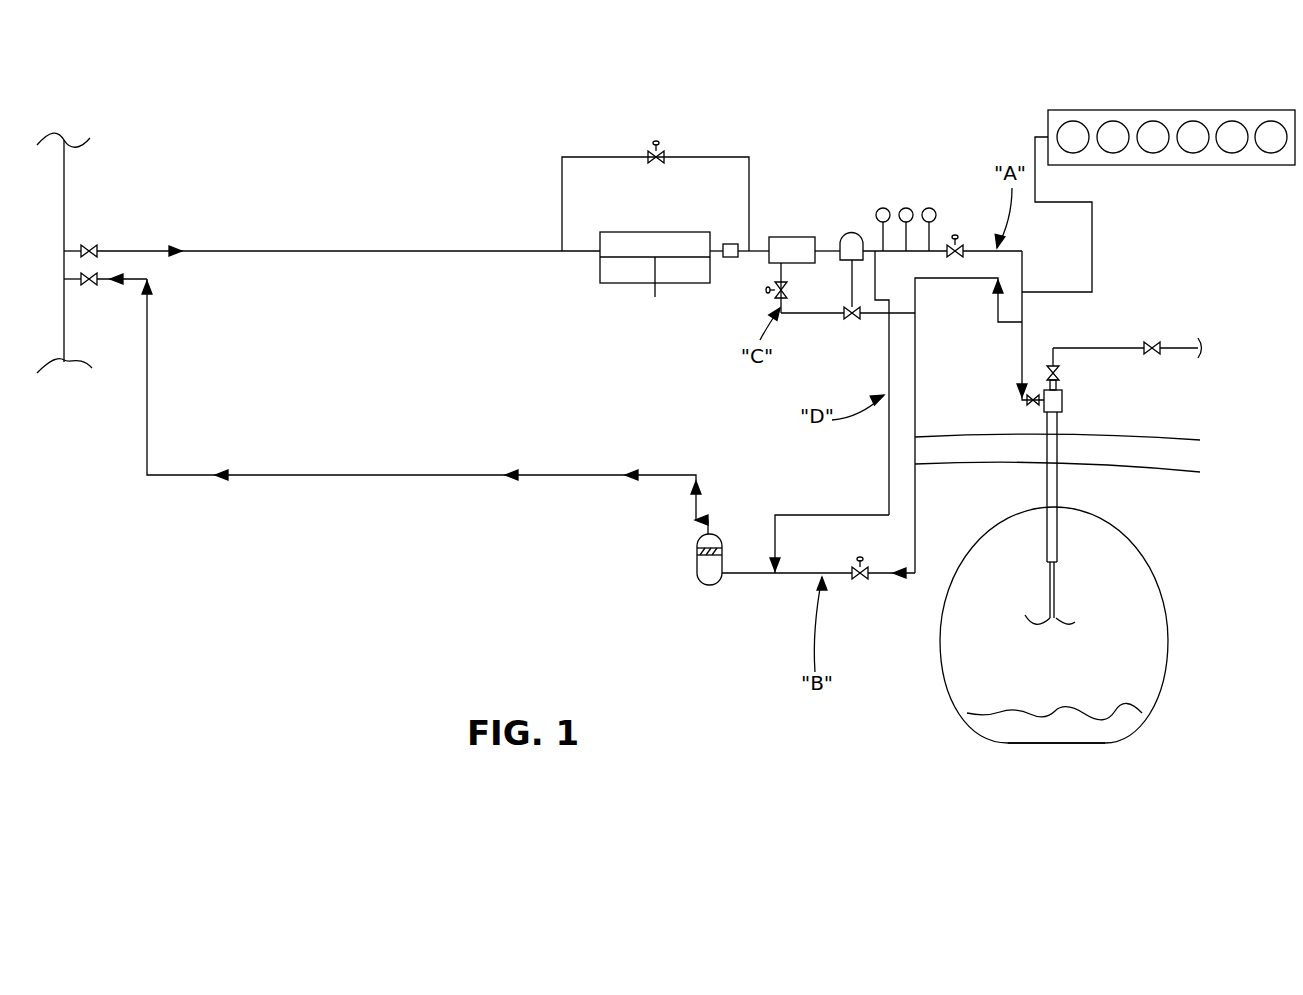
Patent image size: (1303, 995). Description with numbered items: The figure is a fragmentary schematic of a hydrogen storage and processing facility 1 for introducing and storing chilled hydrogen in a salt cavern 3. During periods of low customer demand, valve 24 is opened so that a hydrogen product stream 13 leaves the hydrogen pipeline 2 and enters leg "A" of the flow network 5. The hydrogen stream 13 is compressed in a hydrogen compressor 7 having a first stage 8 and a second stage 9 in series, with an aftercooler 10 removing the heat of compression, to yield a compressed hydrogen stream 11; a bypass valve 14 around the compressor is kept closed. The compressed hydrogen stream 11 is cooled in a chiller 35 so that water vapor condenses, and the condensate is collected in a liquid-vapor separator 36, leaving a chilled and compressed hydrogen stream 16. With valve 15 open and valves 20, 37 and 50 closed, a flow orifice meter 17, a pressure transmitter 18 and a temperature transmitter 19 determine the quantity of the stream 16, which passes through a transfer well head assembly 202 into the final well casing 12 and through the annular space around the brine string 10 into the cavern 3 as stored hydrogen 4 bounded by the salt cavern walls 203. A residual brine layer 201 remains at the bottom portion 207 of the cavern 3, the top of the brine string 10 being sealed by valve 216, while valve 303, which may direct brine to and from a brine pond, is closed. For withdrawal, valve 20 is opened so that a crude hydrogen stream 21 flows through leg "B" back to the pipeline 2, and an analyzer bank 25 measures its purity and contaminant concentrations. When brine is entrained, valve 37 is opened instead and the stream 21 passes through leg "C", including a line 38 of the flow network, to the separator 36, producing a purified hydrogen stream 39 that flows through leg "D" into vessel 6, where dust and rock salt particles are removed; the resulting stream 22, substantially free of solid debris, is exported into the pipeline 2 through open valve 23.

The hydrogen storage and processing facility 1 is at (728, 75).
The hydrogen pipeline 2 is at (90, 138).
The salt cavern 3 is at (1188, 656).
The stored hydrogen 4 is at (1074, 563).
The flow network 5 is at (820, 190).
The vessel 6 is at (697, 560).
The hydrogen compressor 7 is at (662, 232).
The first stage 8 is at (612, 270).
The second stage 9 is at (676, 275).
The brine string 10 is at (731, 258).
The compressed hydrogen stream 11 is at (763, 232).
The final well casing 12 is at (1060, 486).
The hydrogen product stream 13 is at (228, 249).
The bypass valve 14 is at (662, 155).
The valve 15 is at (963, 244).
The chilled and compressed hydrogen stream 16 is at (1023, 278).
The flow orifice meter 17 is at (932, 208).
The pressure transmitter 18 is at (886, 208).
The temperature transmitter 19 is at (909, 208).
The valve 20 is at (860, 580).
The crude hydrogen stream 21 is at (950, 282).
The stream 22 is at (147, 393).
The valve 23 is at (90, 287).
The valve 24 is at (89, 244).
The analyzer bank 25 is at (1097, 110).
The chiller 35 is at (800, 237).
The liquid-vapor separator 36 is at (852, 233).
The valve 37 is at (852, 320).
The drain line 38 is at (800, 315).
The hydrogen stream 39 is at (822, 514).
The valve 50 is at (790, 290).
The residual brine layer 201 is at (1100, 720).
The transfer well head assembly 202 is at (1073, 362).
The salt cavern walls 203 is at (1155, 570).
The bottom portion 207 is at (1048, 744).
The valve 216 is at (1060, 372).
The valve 303 is at (1160, 352).